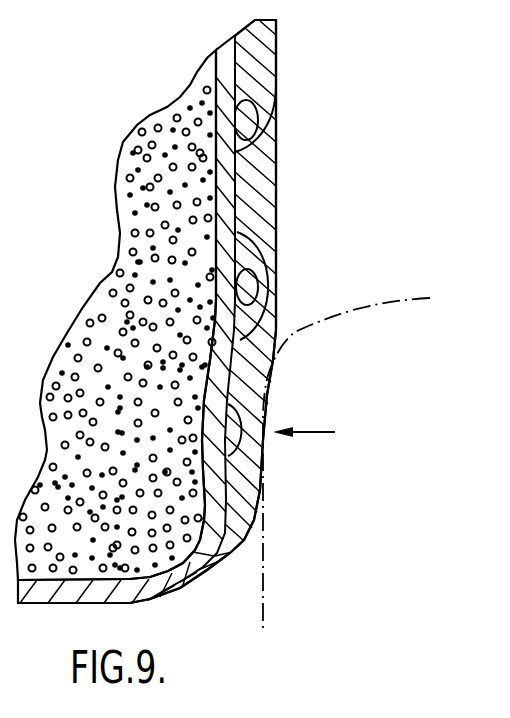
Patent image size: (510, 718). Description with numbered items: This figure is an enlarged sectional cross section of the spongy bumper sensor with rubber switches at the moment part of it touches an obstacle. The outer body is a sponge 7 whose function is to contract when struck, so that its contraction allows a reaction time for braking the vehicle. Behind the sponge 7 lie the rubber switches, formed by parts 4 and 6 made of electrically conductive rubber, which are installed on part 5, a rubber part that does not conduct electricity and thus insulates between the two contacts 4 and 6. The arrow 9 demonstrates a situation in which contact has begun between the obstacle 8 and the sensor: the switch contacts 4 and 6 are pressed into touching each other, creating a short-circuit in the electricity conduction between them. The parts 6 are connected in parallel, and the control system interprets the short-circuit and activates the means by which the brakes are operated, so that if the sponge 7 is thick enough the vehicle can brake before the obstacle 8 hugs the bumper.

The electrically conductive rubber part 4 is at (260, 83).
The insulating rubber part 5 is at (225, 215).
The electrically conductive rubber part 6 is at (260, 143).
The sponge 7 is at (165, 145).
The obstacle 8 is at (337, 310).
The arrow 9 is at (315, 432).